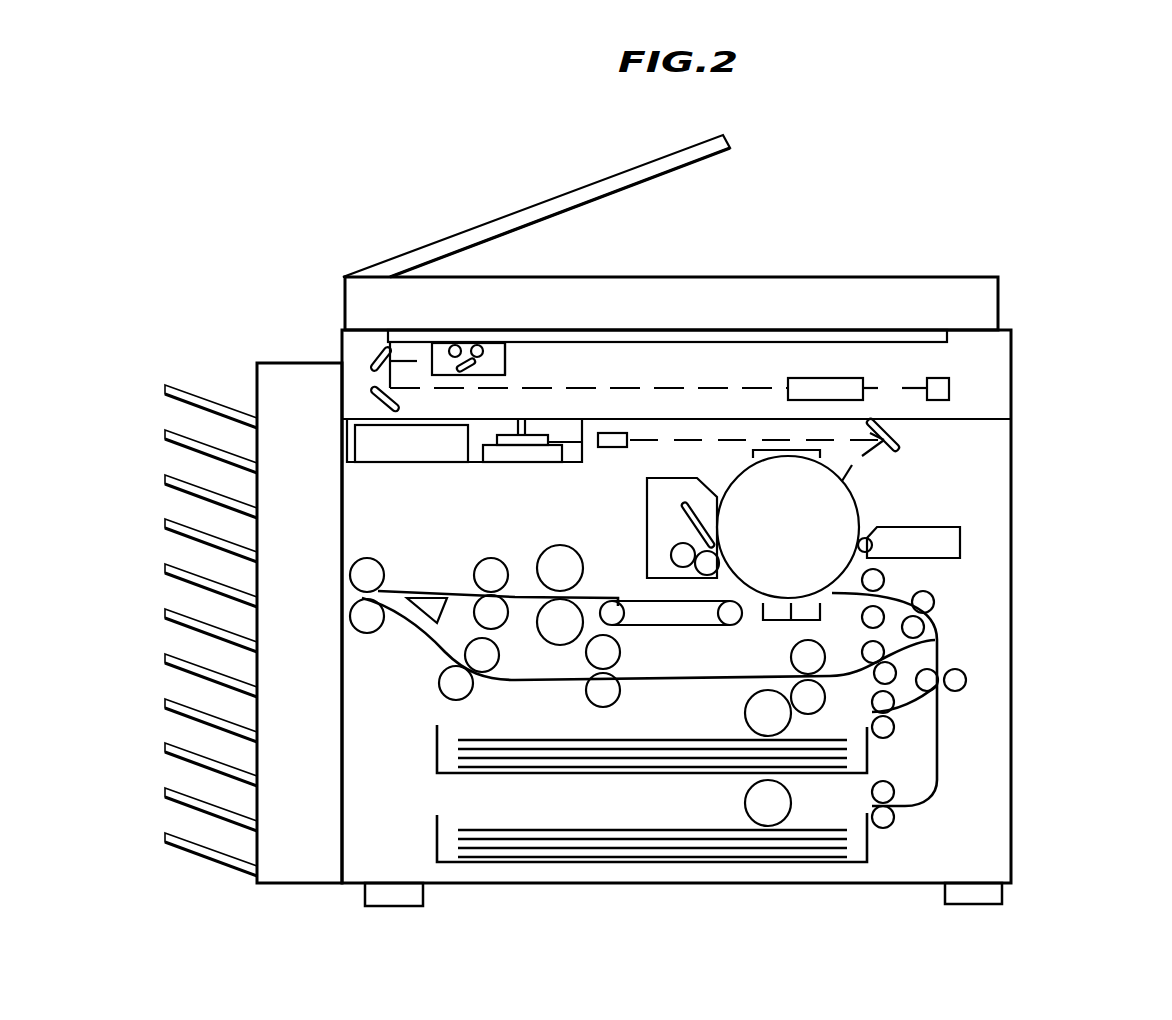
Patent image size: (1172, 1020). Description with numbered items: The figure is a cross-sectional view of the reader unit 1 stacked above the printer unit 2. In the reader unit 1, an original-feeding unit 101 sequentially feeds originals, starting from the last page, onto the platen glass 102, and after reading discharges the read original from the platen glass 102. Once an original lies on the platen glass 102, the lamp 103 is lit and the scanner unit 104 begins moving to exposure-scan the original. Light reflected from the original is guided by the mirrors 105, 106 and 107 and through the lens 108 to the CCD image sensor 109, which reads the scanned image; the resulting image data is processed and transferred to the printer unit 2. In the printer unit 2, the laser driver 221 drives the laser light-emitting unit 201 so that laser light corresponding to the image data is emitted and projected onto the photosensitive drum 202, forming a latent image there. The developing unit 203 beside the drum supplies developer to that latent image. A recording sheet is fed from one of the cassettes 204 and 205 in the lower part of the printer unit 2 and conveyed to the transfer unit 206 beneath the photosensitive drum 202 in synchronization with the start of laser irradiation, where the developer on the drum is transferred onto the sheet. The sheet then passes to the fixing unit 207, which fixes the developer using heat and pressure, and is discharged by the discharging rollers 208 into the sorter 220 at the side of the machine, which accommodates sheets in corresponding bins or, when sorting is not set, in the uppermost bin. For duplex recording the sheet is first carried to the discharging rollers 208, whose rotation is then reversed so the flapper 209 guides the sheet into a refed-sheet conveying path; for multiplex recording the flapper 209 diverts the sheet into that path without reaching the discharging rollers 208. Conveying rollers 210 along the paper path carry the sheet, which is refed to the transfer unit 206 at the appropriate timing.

The reader unit 1 is at (1115, 147).
The printer unit 2 is at (1115, 430).
The original-feeding unit 101 is at (435, 245).
The platen glass 102 is at (905, 340).
The lamp 103 is at (472, 345).
The scanner unit 104 is at (506, 366).
The mirror 105 is at (472, 363).
The mirror 106 is at (376, 353).
The mirror 107 is at (375, 398).
The lens 108 is at (822, 378).
The CCD image sensor 109 is at (950, 388).
The laser light-emitting unit 201 is at (522, 452).
The photosensitive drum 202 is at (842, 505).
The developing unit 203 is at (960, 543).
The cassette 204 is at (852, 757).
The cassette 205 is at (857, 843).
The transfer unit 206 is at (773, 622).
The fixing unit 207 is at (562, 607).
The discharging rollers 208 is at (350, 618).
The flapper 209 is at (422, 615).
The conveying rollers 210 is at (590, 698).
The sorter 220 is at (295, 873).
The laser driver 221 is at (408, 449).